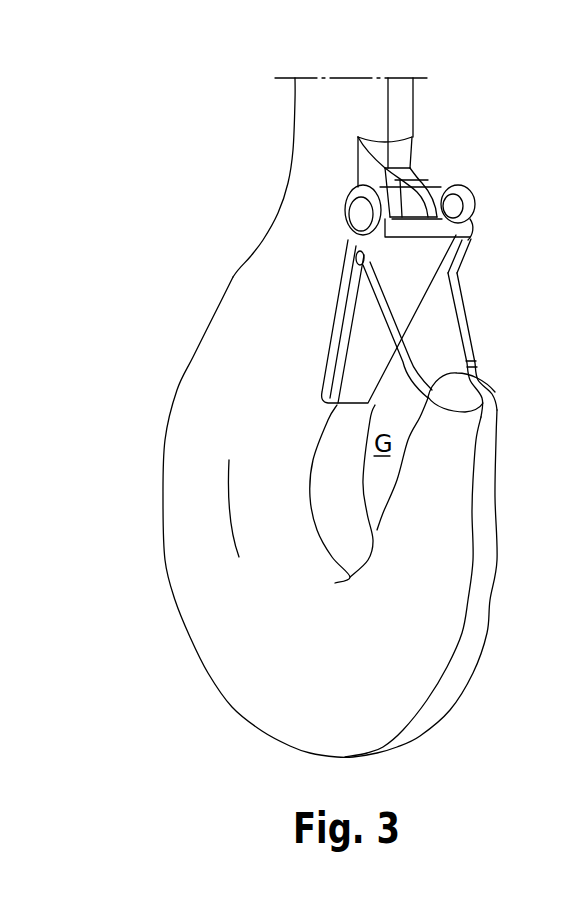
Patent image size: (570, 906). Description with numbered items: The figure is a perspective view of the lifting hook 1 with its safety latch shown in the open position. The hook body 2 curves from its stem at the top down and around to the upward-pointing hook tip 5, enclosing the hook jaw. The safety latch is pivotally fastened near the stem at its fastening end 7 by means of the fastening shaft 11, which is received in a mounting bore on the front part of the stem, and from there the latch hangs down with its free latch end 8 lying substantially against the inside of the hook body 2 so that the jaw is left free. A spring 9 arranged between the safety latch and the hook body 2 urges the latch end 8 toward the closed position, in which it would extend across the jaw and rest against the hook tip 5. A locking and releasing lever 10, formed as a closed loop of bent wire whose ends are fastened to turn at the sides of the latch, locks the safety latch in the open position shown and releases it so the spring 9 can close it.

The lifting hook 1 is at (219, 225).
The hook body 2 is at (176, 398).
The hook tip 5 is at (483, 397).
The fastening end 7 is at (440, 227).
The latch end 8 is at (355, 358).
The spring 9 is at (455, 204).
The locking and releasing lever 10 is at (467, 325).
The fastening shaft 11 is at (442, 193).